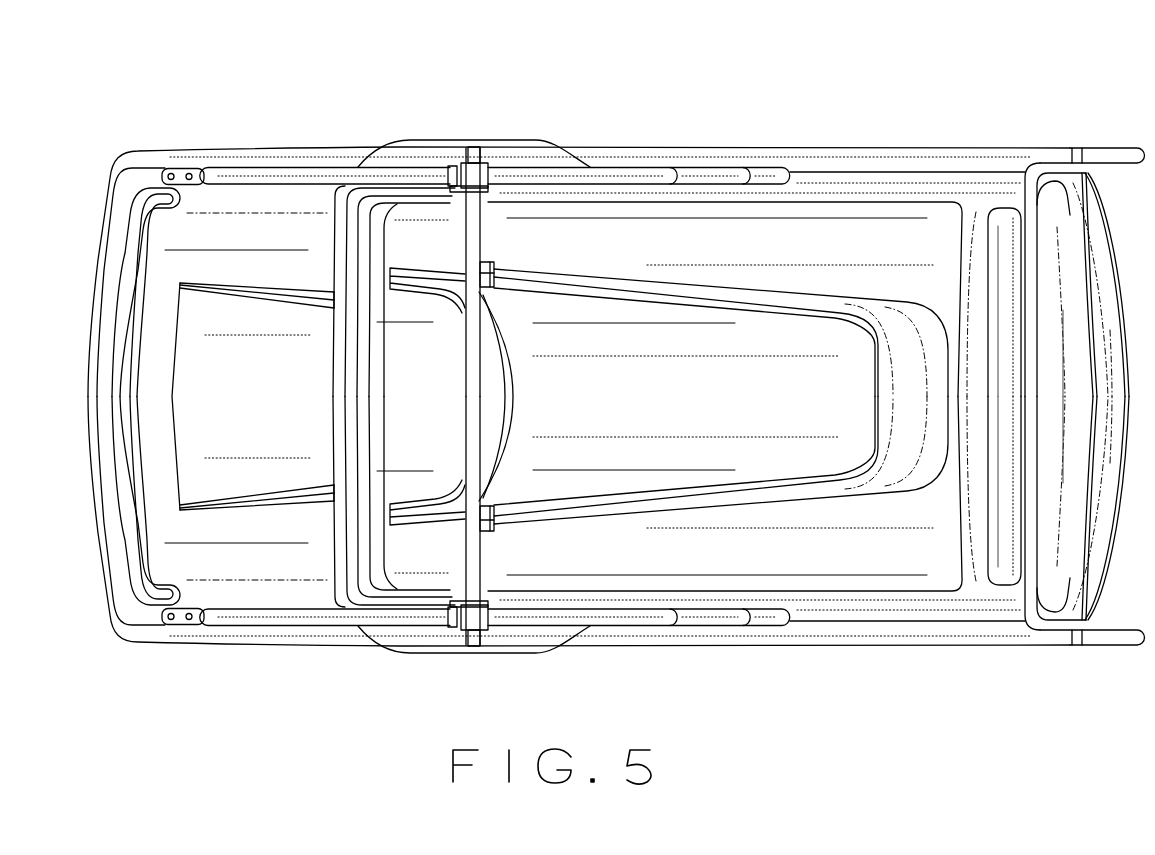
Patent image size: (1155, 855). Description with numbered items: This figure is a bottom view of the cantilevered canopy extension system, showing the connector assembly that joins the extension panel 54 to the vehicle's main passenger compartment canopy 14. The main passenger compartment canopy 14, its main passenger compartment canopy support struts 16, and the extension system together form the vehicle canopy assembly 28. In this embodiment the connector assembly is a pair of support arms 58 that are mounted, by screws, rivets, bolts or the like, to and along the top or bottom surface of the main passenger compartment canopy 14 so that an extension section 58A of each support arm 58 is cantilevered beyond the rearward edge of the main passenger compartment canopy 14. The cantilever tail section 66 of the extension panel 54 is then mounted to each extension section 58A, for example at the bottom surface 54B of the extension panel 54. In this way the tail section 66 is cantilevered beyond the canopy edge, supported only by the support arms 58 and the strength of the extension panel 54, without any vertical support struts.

The main passenger compartment canopy 14 is at (757, 390).
The main passenger compartment canopy support strut 16 is at (485, 178).
The vehicle canopy assembly 28 is at (801, 108).
The extension panel 54 is at (287, 376).
The bottom surface 54B is at (178, 558).
The support arm 58 is at (585, 176).
The extension section 58A is at (343, 182).
The cantilever tail section 66 is at (213, 217).